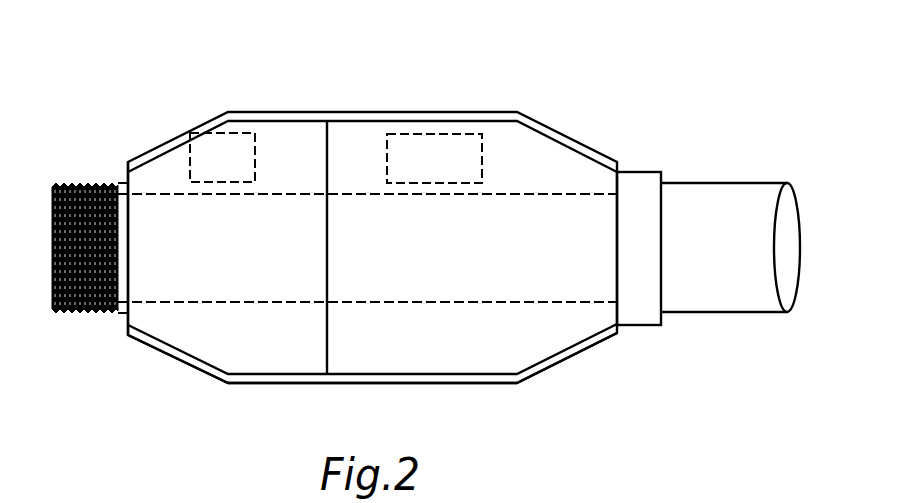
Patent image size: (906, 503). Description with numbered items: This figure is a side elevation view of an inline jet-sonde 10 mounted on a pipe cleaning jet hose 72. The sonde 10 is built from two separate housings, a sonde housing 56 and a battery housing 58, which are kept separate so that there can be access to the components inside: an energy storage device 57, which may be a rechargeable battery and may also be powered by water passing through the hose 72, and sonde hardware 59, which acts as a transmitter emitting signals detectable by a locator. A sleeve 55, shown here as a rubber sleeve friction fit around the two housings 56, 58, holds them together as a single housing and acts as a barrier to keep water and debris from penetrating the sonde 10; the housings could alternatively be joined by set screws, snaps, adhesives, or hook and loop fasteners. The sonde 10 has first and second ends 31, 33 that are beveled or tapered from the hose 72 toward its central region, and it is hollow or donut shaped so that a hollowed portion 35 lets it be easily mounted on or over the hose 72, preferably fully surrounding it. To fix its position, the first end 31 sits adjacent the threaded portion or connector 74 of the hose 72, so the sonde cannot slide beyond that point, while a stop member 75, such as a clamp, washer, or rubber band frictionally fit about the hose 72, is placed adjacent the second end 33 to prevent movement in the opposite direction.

The inline jet-sonde 10 is at (463, 60).
The first end 31 is at (567, 137).
The second end 33 is at (143, 155).
The hollowed portion 35 is at (569, 195).
The sleeve 55 is at (572, 355).
The sonde housing 56 is at (257, 363).
The energy storage device 57 is at (217, 144).
The battery housing 58 is at (473, 363).
The sonde hardware 59 is at (458, 135).
The pipe cleaning jet hose 72 is at (725, 313).
The threaded portion or connector 74 is at (82, 183).
The stop member 75 is at (638, 326).